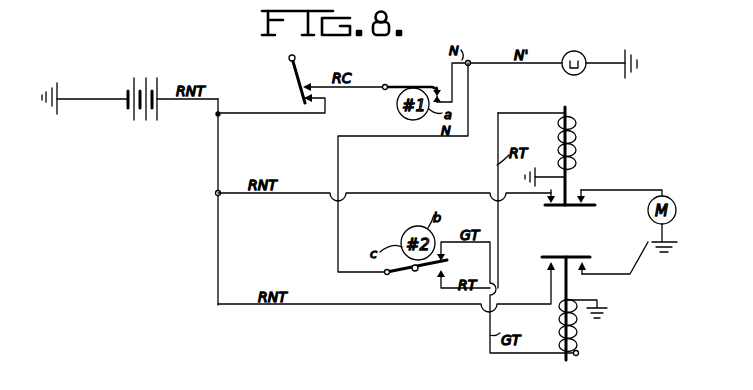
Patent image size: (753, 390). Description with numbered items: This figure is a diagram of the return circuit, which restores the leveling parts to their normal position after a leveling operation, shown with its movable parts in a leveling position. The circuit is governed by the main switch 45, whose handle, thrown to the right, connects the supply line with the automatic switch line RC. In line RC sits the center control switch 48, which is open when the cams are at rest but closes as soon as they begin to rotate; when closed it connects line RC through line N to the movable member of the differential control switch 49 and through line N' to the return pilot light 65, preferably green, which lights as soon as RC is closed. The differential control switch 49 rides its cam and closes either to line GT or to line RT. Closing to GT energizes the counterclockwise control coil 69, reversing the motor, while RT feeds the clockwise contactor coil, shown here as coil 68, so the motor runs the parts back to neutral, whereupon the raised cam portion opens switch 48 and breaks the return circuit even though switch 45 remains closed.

The main switch 45 is at (290, 68).
The center control switch 48 is at (440, 90).
The differential control switch 49 is at (445, 270).
The return pilot light 65 is at (579, 43).
The relay 68 is at (577, 162).
The counterclockwise control coil 69 is at (578, 336).